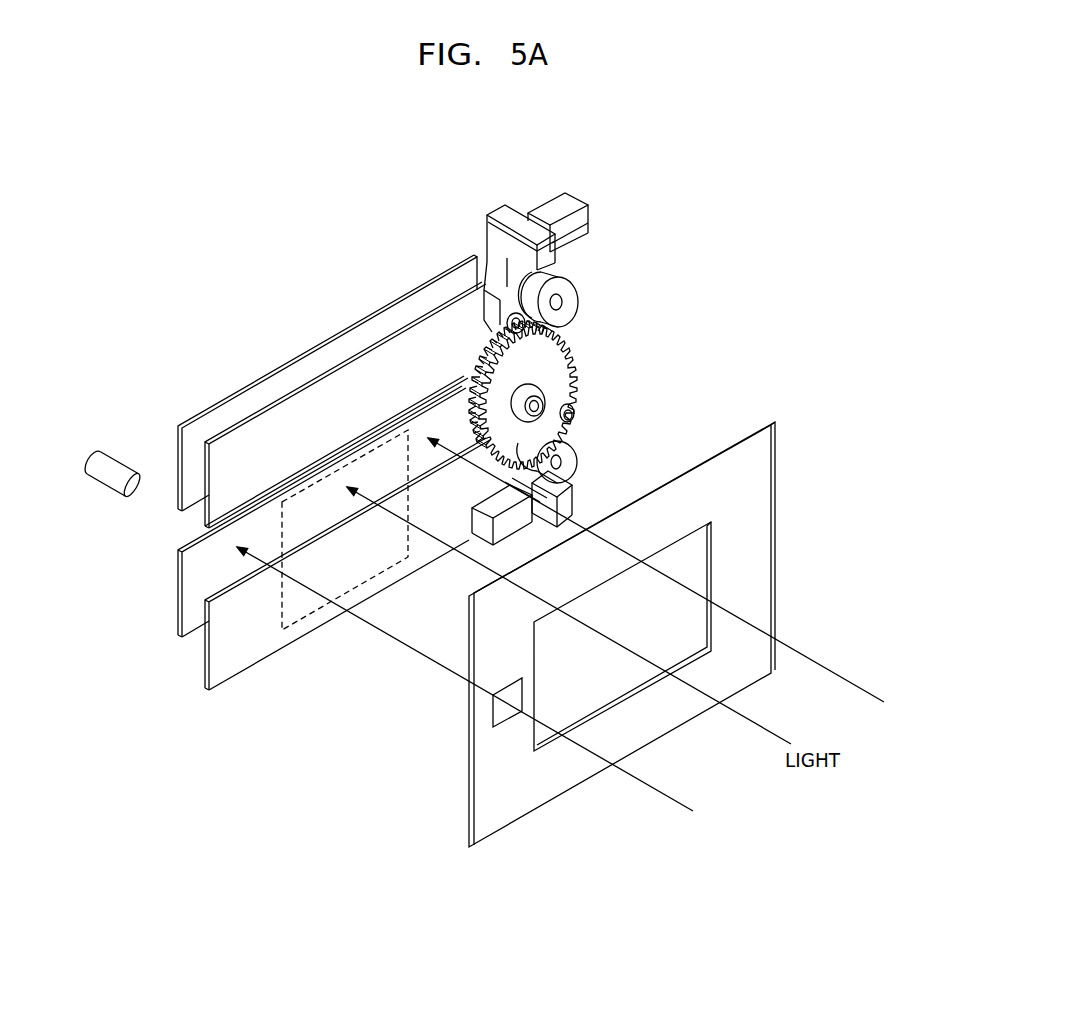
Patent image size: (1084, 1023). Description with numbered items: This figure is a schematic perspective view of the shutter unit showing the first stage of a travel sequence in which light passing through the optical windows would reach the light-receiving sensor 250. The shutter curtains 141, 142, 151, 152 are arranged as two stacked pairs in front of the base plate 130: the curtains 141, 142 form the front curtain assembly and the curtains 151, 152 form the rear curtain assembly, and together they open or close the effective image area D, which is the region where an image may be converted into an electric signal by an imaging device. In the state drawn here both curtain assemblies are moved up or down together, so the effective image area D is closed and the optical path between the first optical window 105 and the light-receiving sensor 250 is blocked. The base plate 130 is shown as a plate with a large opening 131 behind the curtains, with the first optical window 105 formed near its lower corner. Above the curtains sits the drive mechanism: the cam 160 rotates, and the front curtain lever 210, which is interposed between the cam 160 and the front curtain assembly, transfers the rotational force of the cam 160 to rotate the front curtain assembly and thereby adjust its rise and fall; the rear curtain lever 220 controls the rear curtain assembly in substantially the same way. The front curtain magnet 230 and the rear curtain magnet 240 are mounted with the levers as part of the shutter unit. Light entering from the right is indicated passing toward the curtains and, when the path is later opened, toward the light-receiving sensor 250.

The first optical window 105 is at (511, 702).
The base plate 130 is at (612, 634).
The opening 131 is at (708, 556).
The shutter curtain 141 is at (223, 665).
The shutter curtain 142 is at (190, 623).
The shutter curtain 151 is at (293, 412).
The shutter curtain 152 is at (251, 400).
The cam 160 is at (557, 362).
The front curtain lever 210 is at (580, 504).
The rear curtain lever 220 is at (505, 212).
The front curtain magnet 230 is at (553, 438).
The rear curtain magnet 240 is at (560, 200).
The light-receiving sensor 250 is at (110, 462).
The effective image area D is at (305, 530).